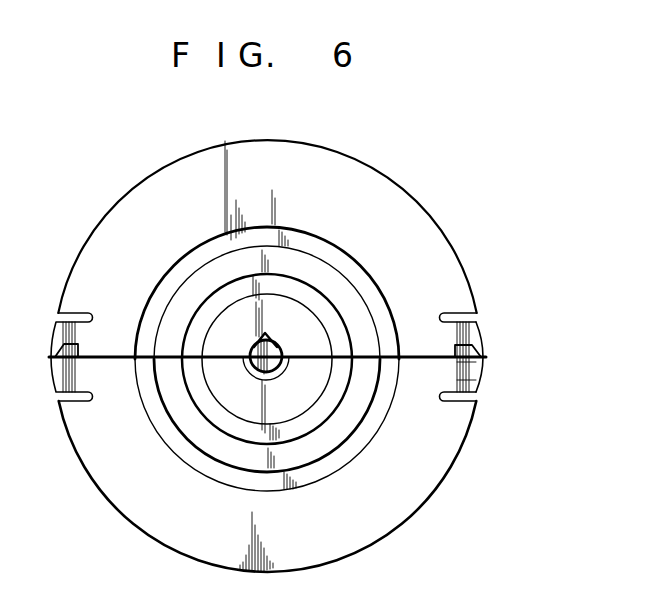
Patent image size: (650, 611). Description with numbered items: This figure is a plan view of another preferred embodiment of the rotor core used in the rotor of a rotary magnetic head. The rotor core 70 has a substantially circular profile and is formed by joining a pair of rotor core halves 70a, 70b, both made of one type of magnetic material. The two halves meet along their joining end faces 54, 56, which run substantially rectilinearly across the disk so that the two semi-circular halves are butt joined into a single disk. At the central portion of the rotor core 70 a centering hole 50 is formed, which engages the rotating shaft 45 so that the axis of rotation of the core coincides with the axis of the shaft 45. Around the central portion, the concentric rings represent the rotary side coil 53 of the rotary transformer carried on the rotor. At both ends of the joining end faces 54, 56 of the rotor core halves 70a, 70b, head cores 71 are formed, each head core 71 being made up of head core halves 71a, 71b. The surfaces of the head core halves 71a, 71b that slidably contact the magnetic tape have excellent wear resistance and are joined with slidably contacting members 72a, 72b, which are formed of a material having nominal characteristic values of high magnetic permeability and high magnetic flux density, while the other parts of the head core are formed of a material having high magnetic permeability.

The rotor core 70 is at (282, 343).
The rotor core half 70a is at (357, 171).
The rotor core half 70b is at (436, 468).
The head core 71 is at (503, 352).
The head core half 71a is at (469, 324).
The head core half 71b is at (477, 383).
The slidably contacting member 72a is at (479, 346).
The slidably contacting member 72b is at (479, 364).
The joining end face 54 is at (119, 362).
The joining end face 56 is at (115, 356).
The rotary side coil 53 is at (216, 415).
The centering hole 50 is at (282, 372).
The shaft 45 is at (279, 348).